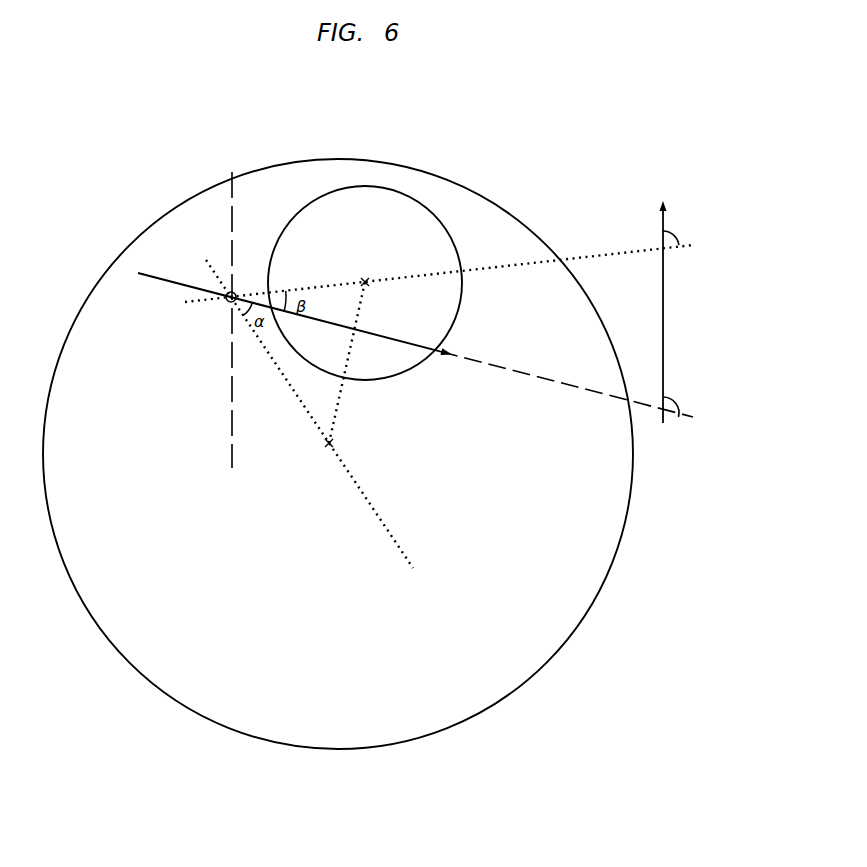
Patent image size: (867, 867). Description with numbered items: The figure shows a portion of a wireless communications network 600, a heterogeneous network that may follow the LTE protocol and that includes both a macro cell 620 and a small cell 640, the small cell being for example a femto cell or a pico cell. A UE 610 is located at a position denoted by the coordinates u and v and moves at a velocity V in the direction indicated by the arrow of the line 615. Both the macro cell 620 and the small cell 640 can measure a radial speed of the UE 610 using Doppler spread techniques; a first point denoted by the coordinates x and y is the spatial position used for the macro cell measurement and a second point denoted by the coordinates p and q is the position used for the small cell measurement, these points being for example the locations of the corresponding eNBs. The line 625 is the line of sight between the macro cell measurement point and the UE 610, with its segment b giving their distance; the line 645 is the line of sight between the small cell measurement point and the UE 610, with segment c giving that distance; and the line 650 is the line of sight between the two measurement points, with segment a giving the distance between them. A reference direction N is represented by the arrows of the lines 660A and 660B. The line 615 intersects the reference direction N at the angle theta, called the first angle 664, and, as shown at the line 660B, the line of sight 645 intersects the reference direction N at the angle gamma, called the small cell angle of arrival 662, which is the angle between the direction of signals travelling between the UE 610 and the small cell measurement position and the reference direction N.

The wireless communications network 600 is at (78, 142).
The UE 610 is at (222, 291).
The line 615 is at (164, 283).
The macro cell 620 is at (505, 211).
The line 625 is at (389, 527).
The small cell 640 is at (461, 304).
The line 645 is at (483, 266).
The line 650 is at (331, 423).
The line 660A is at (234, 222).
The line 660B is at (667, 333).
The small cell angle of arrival 662 is at (695, 245).
The first angle 664 is at (695, 420).